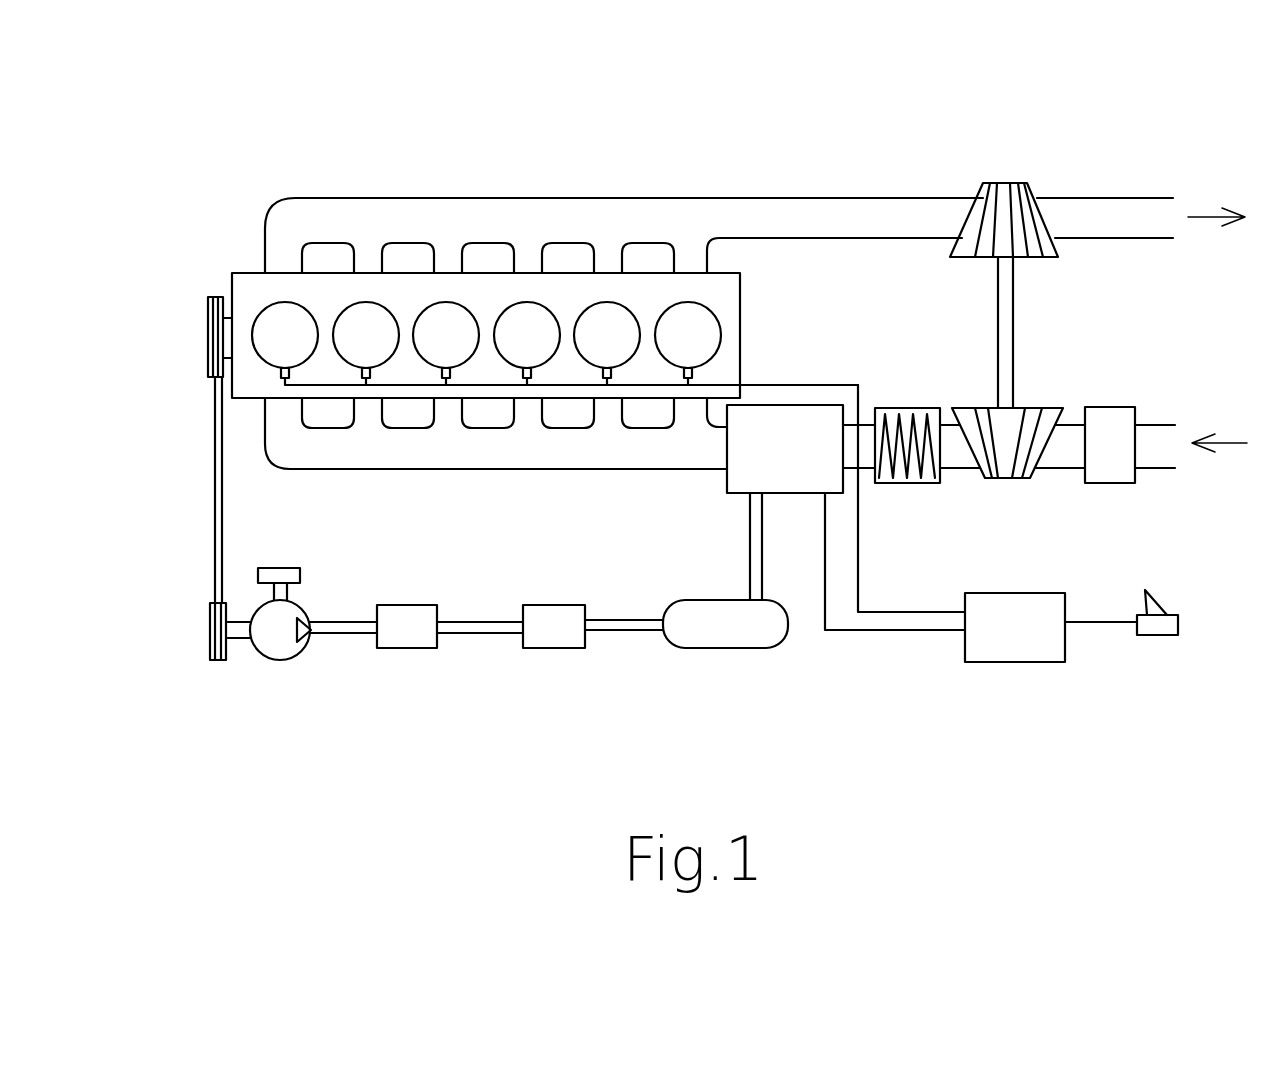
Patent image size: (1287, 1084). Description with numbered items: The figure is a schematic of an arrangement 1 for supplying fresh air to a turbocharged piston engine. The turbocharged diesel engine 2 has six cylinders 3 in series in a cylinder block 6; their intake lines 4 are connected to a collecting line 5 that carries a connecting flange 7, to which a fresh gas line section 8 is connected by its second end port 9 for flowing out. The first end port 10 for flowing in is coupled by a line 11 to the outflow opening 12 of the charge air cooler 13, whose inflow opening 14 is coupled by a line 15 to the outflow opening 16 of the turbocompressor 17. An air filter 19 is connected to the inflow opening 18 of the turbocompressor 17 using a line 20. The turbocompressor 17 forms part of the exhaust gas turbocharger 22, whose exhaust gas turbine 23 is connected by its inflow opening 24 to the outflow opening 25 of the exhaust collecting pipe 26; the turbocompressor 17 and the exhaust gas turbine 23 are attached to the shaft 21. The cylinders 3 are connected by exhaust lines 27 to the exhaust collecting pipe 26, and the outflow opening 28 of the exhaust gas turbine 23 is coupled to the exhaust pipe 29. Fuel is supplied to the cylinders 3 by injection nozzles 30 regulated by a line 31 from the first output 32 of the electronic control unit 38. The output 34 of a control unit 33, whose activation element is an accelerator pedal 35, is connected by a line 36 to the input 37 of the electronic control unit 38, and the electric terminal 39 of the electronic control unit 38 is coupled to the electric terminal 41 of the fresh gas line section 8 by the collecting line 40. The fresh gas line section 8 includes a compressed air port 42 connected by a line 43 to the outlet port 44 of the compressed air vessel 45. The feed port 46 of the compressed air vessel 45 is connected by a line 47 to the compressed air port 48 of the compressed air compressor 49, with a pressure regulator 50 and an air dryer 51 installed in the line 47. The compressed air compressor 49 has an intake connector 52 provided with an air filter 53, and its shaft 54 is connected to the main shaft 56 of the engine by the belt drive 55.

The arrangement 1 is at (253, 153).
The turbocharged diesel engine 2 is at (240, 287).
The cylinder 3 is at (275, 328).
The intake line 4 is at (287, 418).
The collecting line 5 is at (435, 457).
The cylinder block 6 is at (493, 393).
The connecting flange 7 is at (728, 435).
The fresh gas line section 8 is at (787, 425).
The second end port 9 is at (727, 447).
The first end port 10 is at (843, 424).
The line 11 is at (865, 437).
The outflow opening 12 is at (878, 415).
The charge air cooler 13 is at (903, 418).
The inflow opening 14 is at (950, 455).
The line 15 is at (957, 447).
The outflow opening 16 is at (967, 440).
The turbocompressor 17 is at (1007, 440).
The inflow opening 18 is at (1035, 467).
The air filter 19 is at (1105, 455).
The line 20 is at (1067, 448).
The shaft 21 is at (1005, 337).
The exhaust gas turbocharger 22 is at (1015, 303).
The exhaust gas turbine 23 is at (1003, 207).
The inflow opening 24 is at (968, 205).
The outflow opening 25 is at (968, 215).
The exhaust collecting pipe 26 is at (820, 218).
The exhaust line 27 is at (692, 253).
The outflow opening 28 is at (1048, 218).
The exhaust pipe 29 is at (1120, 238).
The injection nozzles 30 is at (367, 385).
The line 31 is at (575, 385).
The output 32 is at (963, 610).
The control unit 33 is at (1158, 625).
The output 34 is at (1133, 620).
The accelerator pedal 35 is at (1160, 605).
The line 36 is at (1100, 623).
The input 37 is at (1065, 640).
The electronic control unit 38 is at (1013, 645).
The electric terminal 39 is at (965, 640).
The collecting line 40 is at (870, 632).
The electric terminal 41 is at (825, 495).
The compressed air port 42 is at (760, 495).
The line 43 is at (750, 550).
The outlet port 44 is at (750, 597).
The compressed air vessel 45 is at (738, 637).
The feed port 46 is at (660, 630).
The line 47 is at (600, 625).
The compressed air port 48 is at (308, 630).
The compressed air compressor 49 is at (283, 645).
The pressure regulator 50 is at (415, 637).
The air dryer 51 is at (560, 633).
The intake connector 52 is at (290, 592).
The air filter 53 is at (285, 572).
The shaft 54 is at (240, 632).
The belt drive 55 is at (213, 458).
The main shaft 56 is at (225, 345).